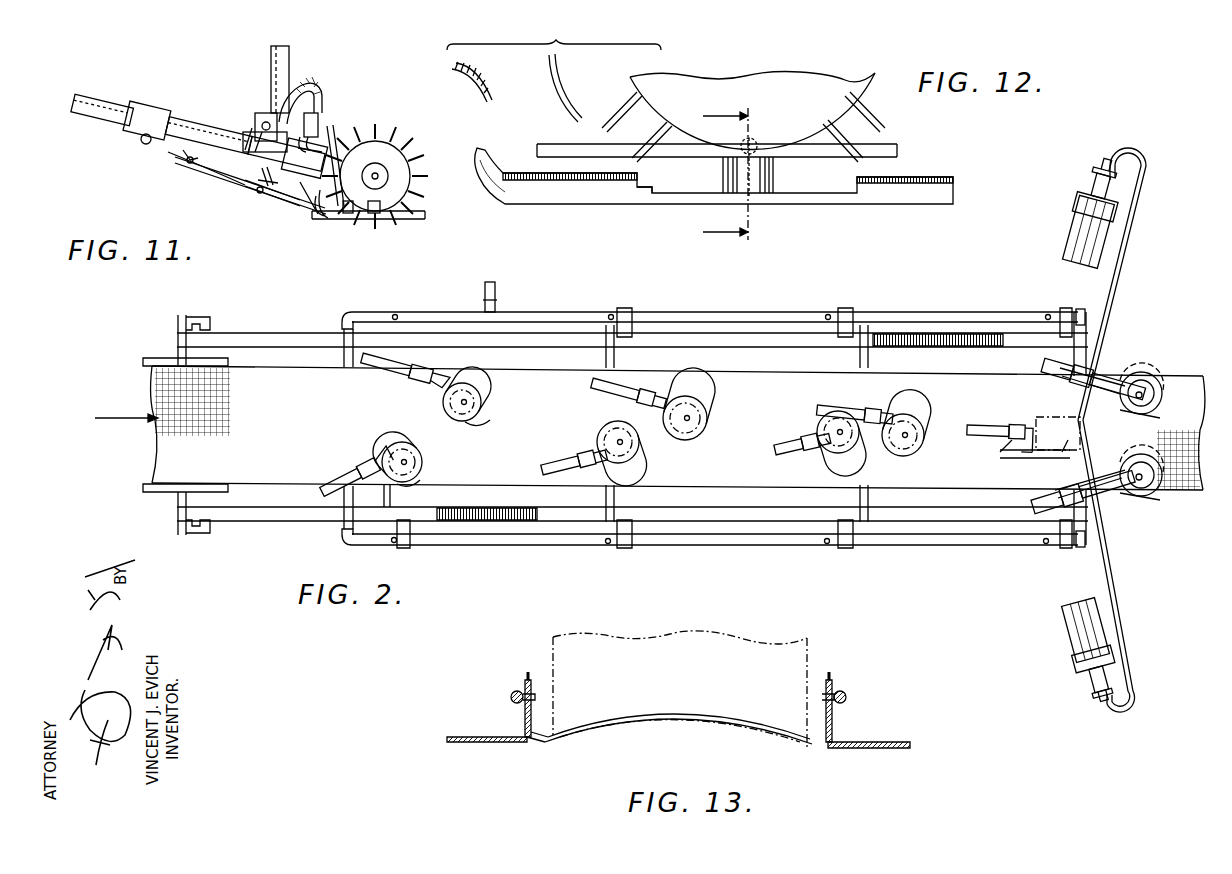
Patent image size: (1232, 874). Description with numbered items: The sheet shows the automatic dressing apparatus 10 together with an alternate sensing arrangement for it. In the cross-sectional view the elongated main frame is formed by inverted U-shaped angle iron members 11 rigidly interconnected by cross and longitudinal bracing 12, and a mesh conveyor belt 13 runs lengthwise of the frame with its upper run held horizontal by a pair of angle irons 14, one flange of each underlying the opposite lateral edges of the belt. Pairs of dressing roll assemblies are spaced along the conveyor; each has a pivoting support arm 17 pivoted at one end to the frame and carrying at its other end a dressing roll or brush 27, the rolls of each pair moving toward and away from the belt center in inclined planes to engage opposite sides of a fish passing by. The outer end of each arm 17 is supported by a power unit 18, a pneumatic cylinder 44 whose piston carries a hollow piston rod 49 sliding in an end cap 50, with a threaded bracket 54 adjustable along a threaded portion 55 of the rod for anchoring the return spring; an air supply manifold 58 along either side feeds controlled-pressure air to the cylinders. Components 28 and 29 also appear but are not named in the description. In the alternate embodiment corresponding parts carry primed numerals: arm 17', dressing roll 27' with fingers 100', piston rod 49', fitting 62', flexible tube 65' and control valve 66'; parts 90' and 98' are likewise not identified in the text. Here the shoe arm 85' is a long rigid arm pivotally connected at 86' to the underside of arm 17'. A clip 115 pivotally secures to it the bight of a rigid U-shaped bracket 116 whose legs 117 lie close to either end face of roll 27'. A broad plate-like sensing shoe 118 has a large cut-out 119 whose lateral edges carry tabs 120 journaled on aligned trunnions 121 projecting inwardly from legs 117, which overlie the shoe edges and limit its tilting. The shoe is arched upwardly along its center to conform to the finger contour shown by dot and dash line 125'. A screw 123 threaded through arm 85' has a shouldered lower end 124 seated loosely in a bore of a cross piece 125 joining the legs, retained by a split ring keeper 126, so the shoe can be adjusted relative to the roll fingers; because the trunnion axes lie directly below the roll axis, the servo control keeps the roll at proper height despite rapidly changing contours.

In FIG. 2, the automatic dressing apparatus 10 is at (522, 557).
In FIG. 2, the inverted U-shaped angle iron members 11 is at (215, 324).
In FIG. 2, the cross and longitudinal bracing 12 is at (769, 336).
In FIG. 12, the conveyor belt 13 is at (714, 173).
In FIG. 2, the conveyor belt 13 is at (160, 451).
In FIG. 2, the angle irons 14 is at (165, 358).
In FIG. 2, the pivoting support arm 17 is at (754, 446).
In FIG. 11, the pivoting support arm 17' is at (198, 128).
In FIG. 12, the power unit 18 is at (1067, 191).
In FIG. 2, the power unit 18 is at (1058, 658).
In FIG. 2, the dressing roll 27 is at (780, 429).
In FIG. 11, the dressing roll 27' is at (401, 159).
In FIG. 12, the dressing roll 27' is at (789, 127).
In FIG. 13, the dressing roll 27' is at (715, 689).
In FIG. 2, the mounting bracket 28 is at (472, 418).
In FIG. 2, the bracket arm 29 is at (1105, 368).
In FIG. 12, the pneumatic cylinder 44 is at (1080, 251).
In FIG. 2, the pneumatic cylinder 44 is at (1065, 608).
In FIG. 12, the hollow piston rod 49 is at (1121, 284).
In FIG. 2, the hollow piston rod 49 is at (1121, 566).
In FIG. 11, the hollow piston rod 49' is at (306, 75).
In FIG. 12, the cylinder end cap 50 is at (1090, 192).
In FIG. 2, the cylinder end cap 50 is at (1089, 680).
In FIG. 12, the threaded bracket 54 is at (1102, 160).
In FIG. 2, the threaded bracket 54 is at (1092, 700).
In FIG. 12, the threaded portion 55 is at (1090, 172).
In FIG. 2, the air supply manifold 58 is at (703, 312).
In FIG. 11, the fitting 62' is at (257, 96).
In FIG. 11, the flexible tube 65' is at (326, 93).
In FIG. 11, the control valve 66' is at (336, 118).
In FIG. 11, the shoe arm 85' is at (181, 170).
In FIG. 12, the shoe arm 85' is at (489, 78).
In FIG. 11, the pivotal connection 86' is at (118, 148).
In FIG. 11, the curved pad 90' is at (305, 216).
In FIG. 12, the curved pad 90' is at (581, 87).
In FIG. 12, the hood 98' is at (752, 94).
In FIG. 11, the dressing roll fingers 100' is at (401, 173).
In FIG. 12, the dressing roll fingers 100' is at (923, 117).
In FIG. 11, the clip 115 is at (190, 165).
In FIG. 11, the U-shaped bracket 116 is at (207, 183).
In FIG. 11, the bracket legs 117 is at (357, 214).
In FIG. 12, the bracket legs 117 is at (708, 160).
In FIG. 13, the bracket legs 117 is at (510, 695).
In FIG. 11, the sensing shoe 118 is at (400, 220).
In FIG. 12, the sensing shoe 118 is at (578, 202).
In FIG. 13, the sensing shoe 118 is at (465, 742).
In FIG. 12, the cut-out 119 is at (652, 193).
In FIG. 13, the cut-out 119 is at (540, 742).
In FIG. 11, the tabs 120 is at (374, 214).
In FIG. 12, the tabs 120 is at (748, 185).
In FIG. 13, the tabs 120 is at (533, 708).
In FIG. 11, the trunnions 121 is at (268, 187).
In FIG. 12, the trunnions 121 is at (765, 170).
In FIG. 13, the trunnions 121 is at (537, 690).
In FIG. 11, the screw 123 is at (250, 132).
In FIG. 11, the shouldered lower end 124 is at (300, 190).
In FIG. 11, the cross piece 125 is at (256, 193).
In FIG. 13, the dot and dash line 125' is at (678, 737).
In FIG. 11, the split ring keeper 126 is at (259, 195).